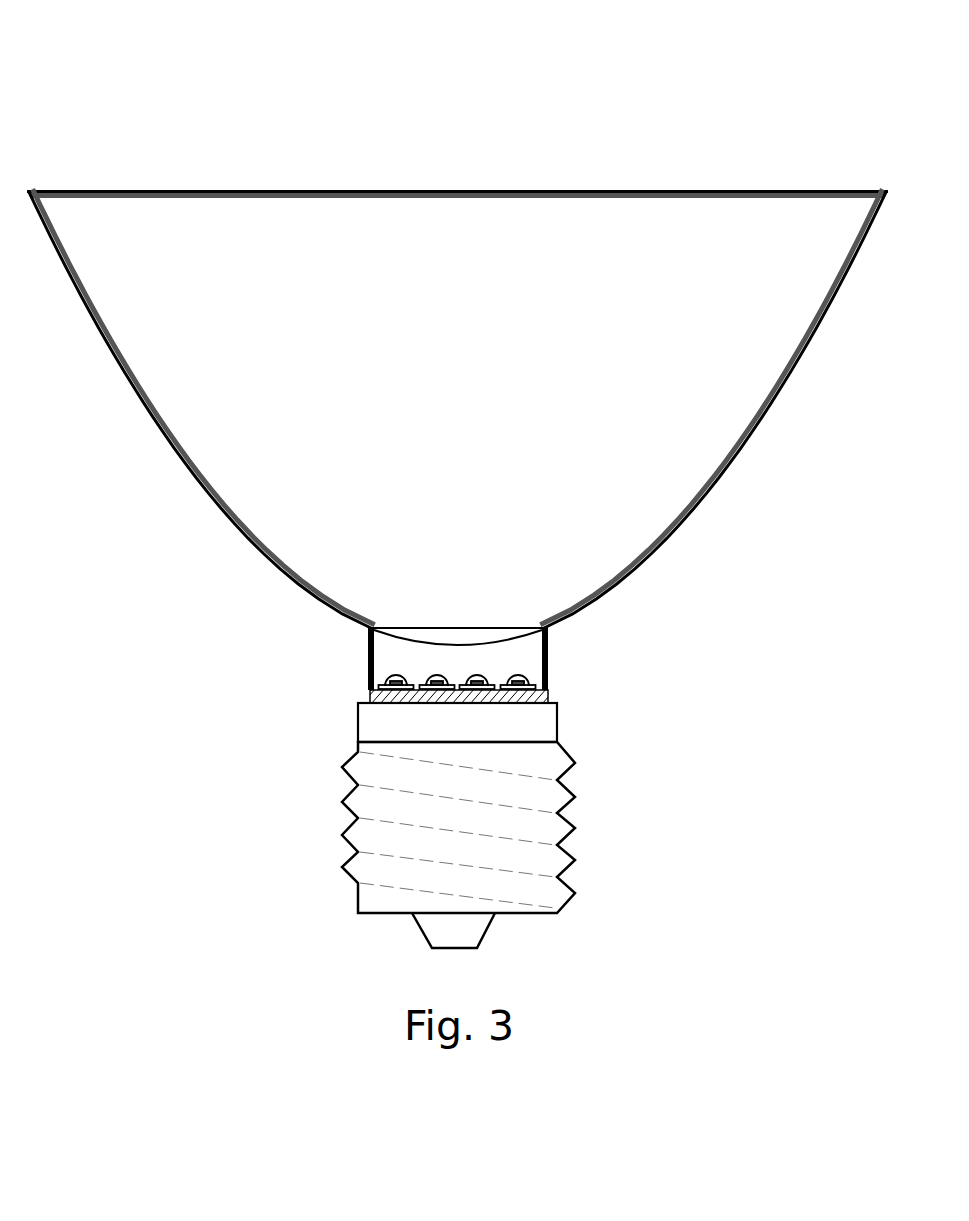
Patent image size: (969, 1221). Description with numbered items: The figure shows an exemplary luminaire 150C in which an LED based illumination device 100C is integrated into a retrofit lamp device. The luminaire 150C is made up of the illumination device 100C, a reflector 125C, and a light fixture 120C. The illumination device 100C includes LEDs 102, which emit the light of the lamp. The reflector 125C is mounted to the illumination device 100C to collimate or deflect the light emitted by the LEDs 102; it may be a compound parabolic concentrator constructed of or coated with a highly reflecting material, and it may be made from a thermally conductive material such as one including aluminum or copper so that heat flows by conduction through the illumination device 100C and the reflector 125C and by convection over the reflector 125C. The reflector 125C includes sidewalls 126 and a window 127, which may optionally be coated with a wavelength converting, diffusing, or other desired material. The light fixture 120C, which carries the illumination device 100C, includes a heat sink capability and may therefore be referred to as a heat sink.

The luminaire 150C is at (112, 75).
The reflector 125C is at (672, 540).
The sidewalls 126 is at (153, 387).
The window 127 is at (639, 208).
The illumination device 100C is at (370, 663).
The LEDs 102 is at (545, 668).
The light fixture 120C is at (557, 722).